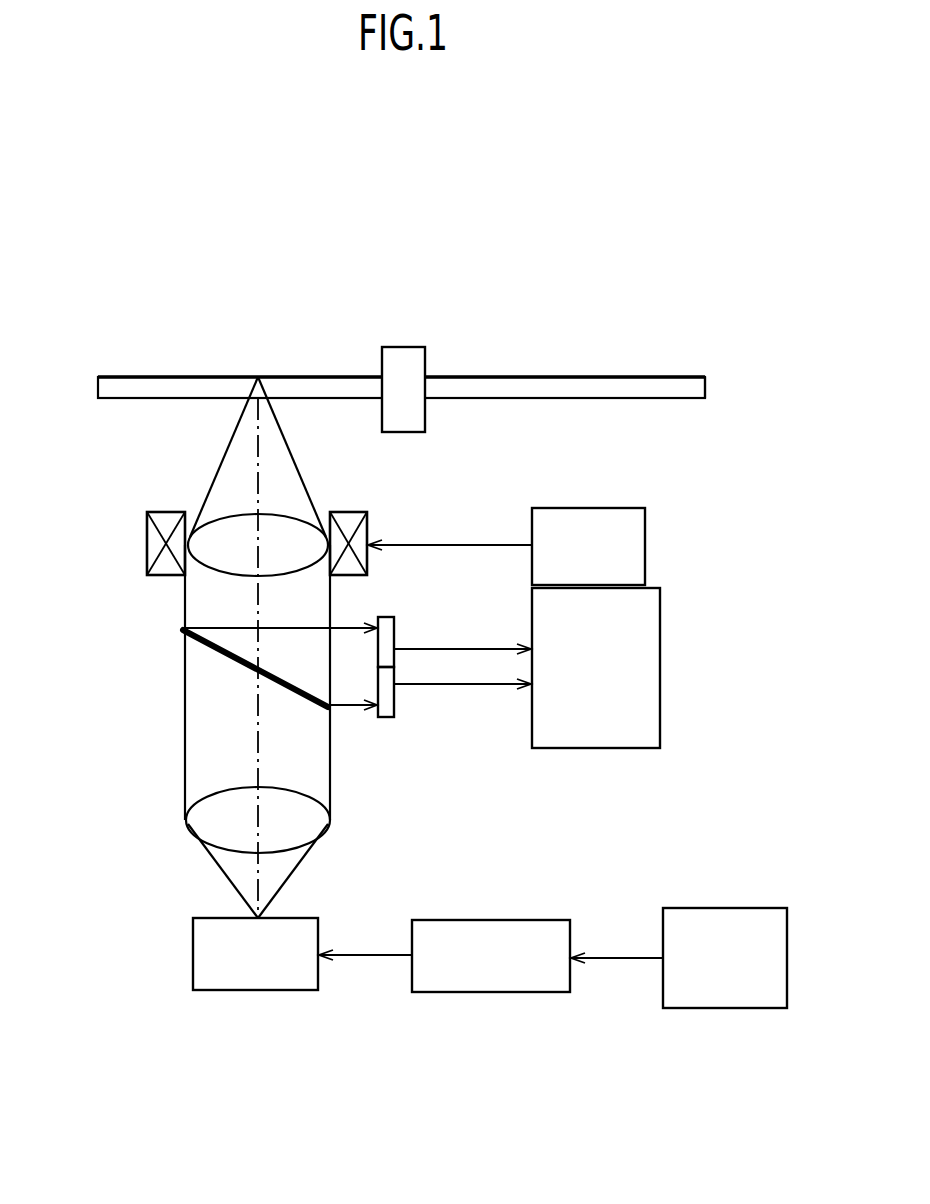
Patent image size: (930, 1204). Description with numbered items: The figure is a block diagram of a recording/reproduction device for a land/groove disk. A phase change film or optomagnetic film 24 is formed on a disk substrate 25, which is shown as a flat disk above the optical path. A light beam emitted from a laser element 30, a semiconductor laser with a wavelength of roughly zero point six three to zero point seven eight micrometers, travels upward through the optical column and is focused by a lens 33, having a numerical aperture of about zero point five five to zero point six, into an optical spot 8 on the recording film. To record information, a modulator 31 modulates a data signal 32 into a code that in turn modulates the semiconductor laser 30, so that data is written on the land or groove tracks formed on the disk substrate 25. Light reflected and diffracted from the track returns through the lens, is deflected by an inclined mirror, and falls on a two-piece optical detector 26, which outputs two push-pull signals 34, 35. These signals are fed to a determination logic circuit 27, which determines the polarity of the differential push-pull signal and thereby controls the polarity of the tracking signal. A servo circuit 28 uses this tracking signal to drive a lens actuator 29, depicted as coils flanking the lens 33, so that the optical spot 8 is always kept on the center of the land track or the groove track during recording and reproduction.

The optical spot 8 is at (258, 377).
The phase change film or optomagnetic film 24 is at (545, 378).
The disk substrate 25 is at (710, 389).
The two-piece optical detector 26 is at (382, 720).
The determination logic circuit 27 is at (660, 670).
The servo circuit 28 is at (645, 550).
The lens actuator 29 is at (145, 548).
The laser element 30 is at (252, 992).
The modulator 31 is at (467, 993).
The data signal 32 is at (728, 1010).
The lens 33 is at (235, 558).
The detection signal 34 is at (452, 647).
The detection signal 35 is at (448, 688).